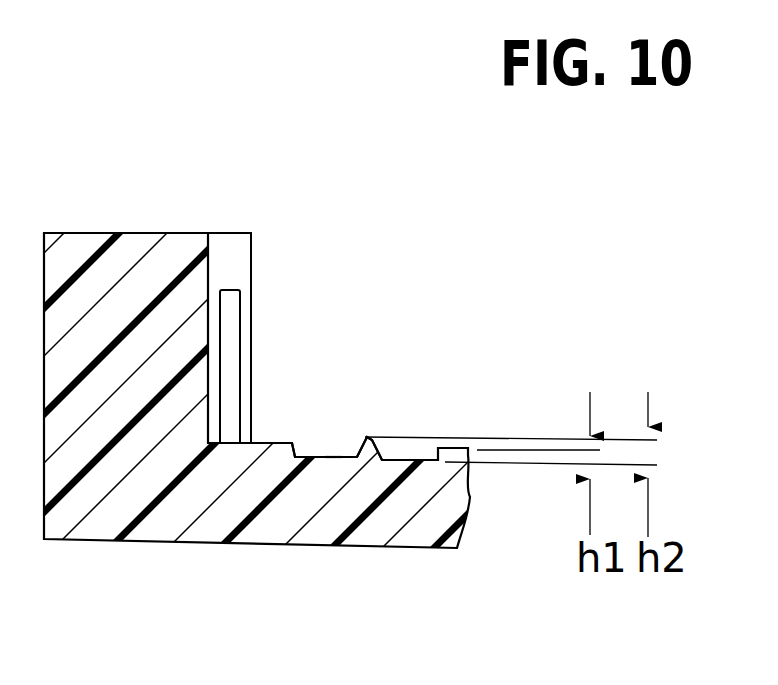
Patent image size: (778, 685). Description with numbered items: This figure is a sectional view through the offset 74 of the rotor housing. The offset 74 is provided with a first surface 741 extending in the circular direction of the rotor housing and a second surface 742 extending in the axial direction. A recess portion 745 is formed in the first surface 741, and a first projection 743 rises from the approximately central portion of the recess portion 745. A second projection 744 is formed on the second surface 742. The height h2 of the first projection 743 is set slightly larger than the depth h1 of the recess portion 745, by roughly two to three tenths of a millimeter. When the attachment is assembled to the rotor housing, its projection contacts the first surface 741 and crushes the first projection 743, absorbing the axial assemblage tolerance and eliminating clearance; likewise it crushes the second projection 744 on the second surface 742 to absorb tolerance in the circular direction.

The offset 74 is at (138, 558).
The first surface 741 is at (287, 443).
The second surface 742 is at (227, 243).
The first projection 743 is at (365, 437).
The second projection 744 is at (233, 319).
The recess portion 745 is at (342, 460).